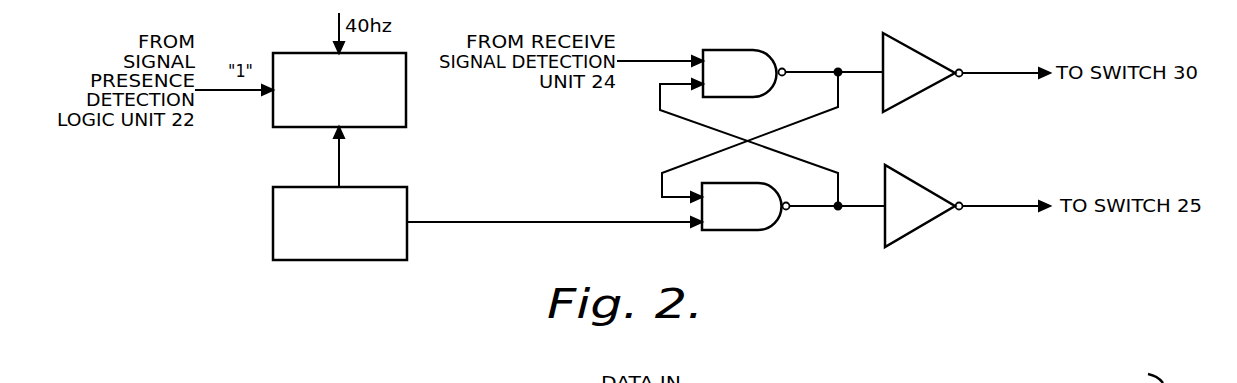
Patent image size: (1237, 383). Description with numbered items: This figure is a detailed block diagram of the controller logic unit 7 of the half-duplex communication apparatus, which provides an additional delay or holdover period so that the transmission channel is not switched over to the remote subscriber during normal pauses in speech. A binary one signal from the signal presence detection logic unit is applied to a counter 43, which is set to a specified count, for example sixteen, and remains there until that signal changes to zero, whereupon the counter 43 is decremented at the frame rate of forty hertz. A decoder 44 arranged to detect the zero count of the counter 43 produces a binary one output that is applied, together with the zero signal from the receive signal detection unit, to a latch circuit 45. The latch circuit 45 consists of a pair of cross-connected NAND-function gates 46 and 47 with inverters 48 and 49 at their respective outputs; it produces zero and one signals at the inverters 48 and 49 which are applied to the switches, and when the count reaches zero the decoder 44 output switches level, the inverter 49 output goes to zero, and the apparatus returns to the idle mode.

The controller logic unit 7 is at (449, 256).
The counter 43 is at (407, 114).
The decoder 44 is at (407, 193).
The latch circuit 45 is at (810, 143).
The NAND-function gate 46 is at (750, 50).
The NAND-function gate 47 is at (755, 230).
The inverter 48 is at (920, 50).
The inverter 49 is at (912, 178).